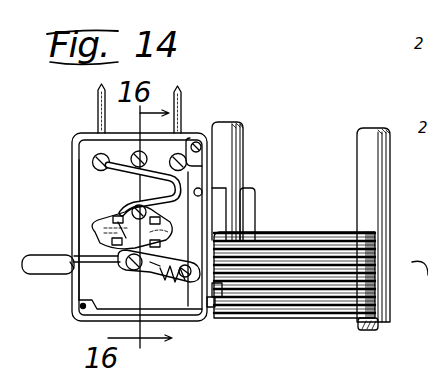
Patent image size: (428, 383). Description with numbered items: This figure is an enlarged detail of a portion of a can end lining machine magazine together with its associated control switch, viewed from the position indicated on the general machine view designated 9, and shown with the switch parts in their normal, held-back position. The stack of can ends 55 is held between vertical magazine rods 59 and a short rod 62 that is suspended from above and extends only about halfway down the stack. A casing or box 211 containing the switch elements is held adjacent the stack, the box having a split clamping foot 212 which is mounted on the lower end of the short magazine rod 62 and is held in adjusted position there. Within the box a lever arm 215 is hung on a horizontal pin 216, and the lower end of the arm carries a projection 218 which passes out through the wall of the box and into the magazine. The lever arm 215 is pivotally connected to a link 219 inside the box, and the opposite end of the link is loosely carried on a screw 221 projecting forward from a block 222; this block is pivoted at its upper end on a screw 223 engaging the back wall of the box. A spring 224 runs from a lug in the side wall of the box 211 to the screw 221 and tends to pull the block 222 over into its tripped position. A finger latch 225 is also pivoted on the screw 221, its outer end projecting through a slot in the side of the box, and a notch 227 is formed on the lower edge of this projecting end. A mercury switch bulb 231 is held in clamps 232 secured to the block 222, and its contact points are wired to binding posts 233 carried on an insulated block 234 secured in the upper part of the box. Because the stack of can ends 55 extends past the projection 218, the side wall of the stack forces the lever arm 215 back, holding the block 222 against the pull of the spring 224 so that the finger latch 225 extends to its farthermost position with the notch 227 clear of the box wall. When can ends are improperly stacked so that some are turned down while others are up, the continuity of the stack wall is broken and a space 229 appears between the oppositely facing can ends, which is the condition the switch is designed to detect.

The housing 9 is at (75, 137).
The insulated block 234 is at (120, 150).
The short magazine rod 62 is at (241, 131).
The binding posts 233 is at (186, 160).
The horizontal pin 216 is at (202, 191).
The split clamping foot 212 is at (250, 201).
The lever arm 215 is at (195, 221).
The can ends 55 is at (294, 240).
The magazine rods 59 is at (362, 152).
The casing or box 211 is at (77, 190).
The mercury switch bulb 231 is at (121, 213).
The screw 223 is at (150, 196).
The clamps 232 is at (100, 244).
The finger latch 225 is at (29, 268).
The notch 227 is at (67, 280).
The block 222 is at (119, 253).
The screw 221 is at (134, 271).
The spring 224 is at (173, 288).
The link 219 is at (162, 266).
The projection 218 is at (211, 310).
The space between can ends 229 is at (230, 290).